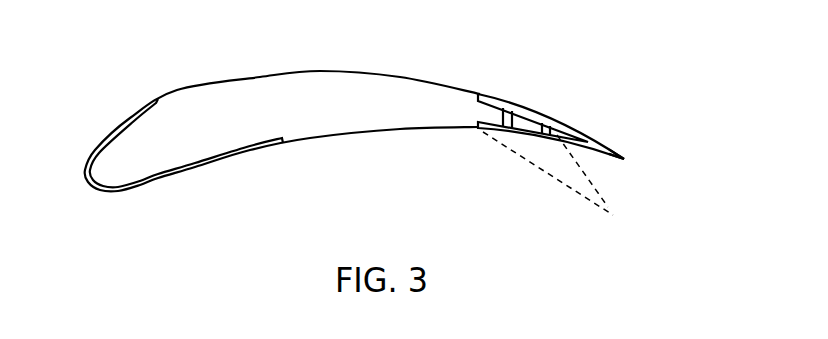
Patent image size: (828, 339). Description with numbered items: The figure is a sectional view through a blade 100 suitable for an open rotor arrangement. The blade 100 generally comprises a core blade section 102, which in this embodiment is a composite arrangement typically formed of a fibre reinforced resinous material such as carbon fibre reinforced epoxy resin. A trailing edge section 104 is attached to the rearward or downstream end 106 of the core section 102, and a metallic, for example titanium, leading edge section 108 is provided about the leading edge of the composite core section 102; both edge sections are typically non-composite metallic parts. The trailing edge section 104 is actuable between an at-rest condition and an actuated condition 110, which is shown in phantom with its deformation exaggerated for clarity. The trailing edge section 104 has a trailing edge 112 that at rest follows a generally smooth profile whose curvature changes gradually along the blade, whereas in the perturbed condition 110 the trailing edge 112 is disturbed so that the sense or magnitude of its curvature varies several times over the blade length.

The blade 100 is at (160, 70).
The core blade section 102 is at (258, 85).
The trailing edge section 104 is at (553, 112).
The rearward or downstream end 106 is at (499, 112).
The leading edge section 108 is at (223, 167).
The actuated condition 110 is at (545, 163).
The trailing edge 112 is at (628, 156).